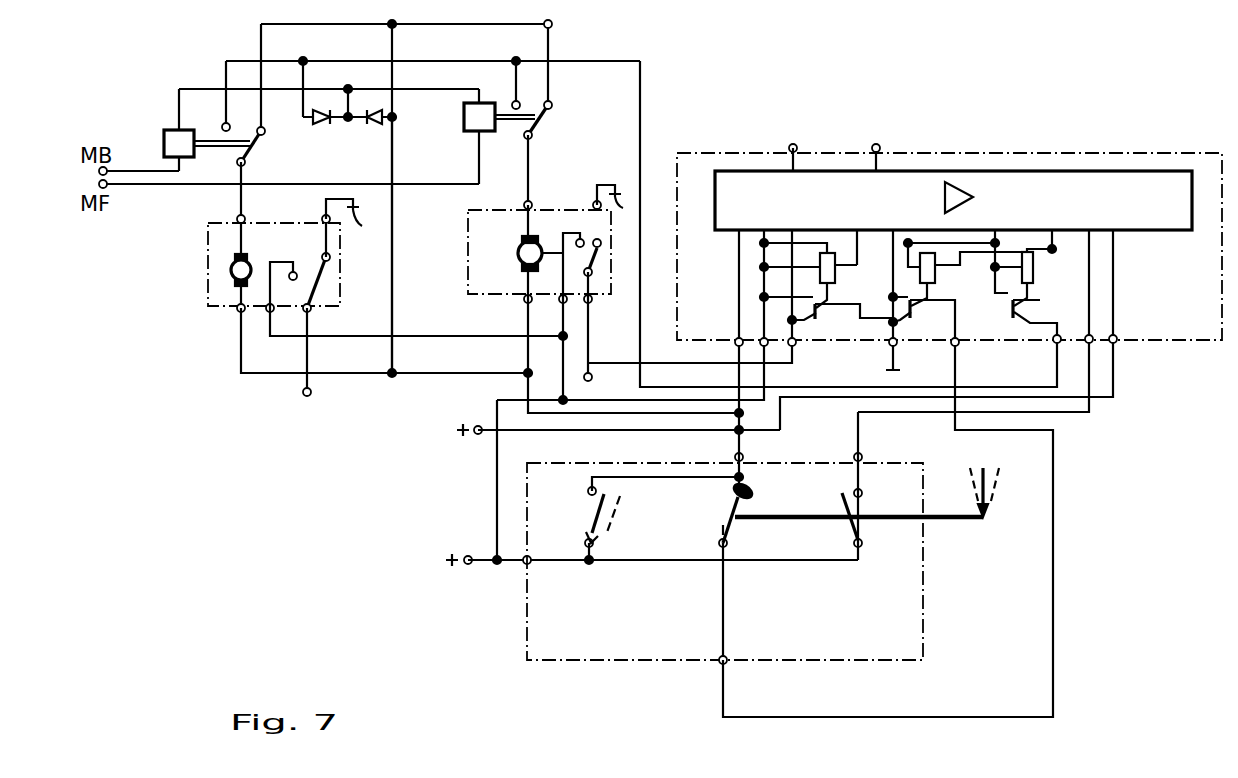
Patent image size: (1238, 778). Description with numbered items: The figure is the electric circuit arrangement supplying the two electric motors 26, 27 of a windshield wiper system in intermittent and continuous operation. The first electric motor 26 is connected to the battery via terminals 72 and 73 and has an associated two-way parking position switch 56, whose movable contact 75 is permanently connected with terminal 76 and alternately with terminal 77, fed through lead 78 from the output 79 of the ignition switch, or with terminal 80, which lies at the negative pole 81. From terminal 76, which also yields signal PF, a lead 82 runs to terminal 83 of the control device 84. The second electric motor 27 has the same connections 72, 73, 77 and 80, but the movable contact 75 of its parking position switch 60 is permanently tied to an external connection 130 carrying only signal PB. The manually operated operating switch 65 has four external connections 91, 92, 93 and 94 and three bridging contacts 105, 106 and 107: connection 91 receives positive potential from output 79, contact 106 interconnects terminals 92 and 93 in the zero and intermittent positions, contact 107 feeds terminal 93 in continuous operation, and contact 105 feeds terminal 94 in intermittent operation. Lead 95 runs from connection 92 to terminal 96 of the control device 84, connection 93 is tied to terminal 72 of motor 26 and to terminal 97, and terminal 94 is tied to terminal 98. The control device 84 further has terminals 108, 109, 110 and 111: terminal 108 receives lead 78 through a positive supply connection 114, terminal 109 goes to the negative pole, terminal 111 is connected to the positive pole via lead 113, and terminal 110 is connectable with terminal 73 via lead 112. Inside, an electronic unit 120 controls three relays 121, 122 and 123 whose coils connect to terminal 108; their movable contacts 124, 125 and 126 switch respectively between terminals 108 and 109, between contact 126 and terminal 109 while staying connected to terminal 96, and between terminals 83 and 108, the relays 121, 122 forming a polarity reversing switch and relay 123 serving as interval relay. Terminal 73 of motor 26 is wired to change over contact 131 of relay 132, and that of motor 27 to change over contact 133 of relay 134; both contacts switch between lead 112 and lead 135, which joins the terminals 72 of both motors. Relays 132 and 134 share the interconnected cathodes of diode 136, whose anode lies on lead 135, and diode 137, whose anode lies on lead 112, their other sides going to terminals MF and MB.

The relay 134 is at (172, 140).
The change over contact 133 is at (254, 150).
The diode 137 is at (318, 126).
The diode 136 is at (375, 126).
The relay 132 is at (470, 124).
The change over contact 131 is at (545, 118).
The lead 135 is at (394, 225).
The parking position switch 60 is at (305, 252).
The electric motor 27 is at (230, 270).
The external connection 130 is at (312, 310).
The movable contact 75 is at (322, 272).
The terminal 80 is at (322, 215).
The negative pole 81 is at (902, 422).
The terminal 73 is at (236, 217).
The terminal 72 is at (237, 312).
The terminal 77 is at (267, 312).
The parking position switch 56 is at (557, 220).
The electric motor 26 is at (518, 253).
The terminal 76 is at (591, 302).
The connecting line 82 is at (660, 363).
The lead 112 is at (1002, 386).
The lead 78 is at (495, 400).
The supply terminal 114 is at (470, 434).
The lead 113 is at (1102, 397).
The output of ignition switch 79 is at (466, 555).
The external connection 91 is at (522, 565).
The operating switch 65 is at (924, 632).
The bridging contact 107 is at (590, 503).
The bridging contact 106 is at (730, 520).
The bridging contact 105 is at (845, 523).
The external connection 93 is at (735, 456).
The external connection 94 is at (854, 456).
The external connection 92 is at (718, 664).
The lead 95 is at (882, 717).
The electronic unit 120 is at (1135, 190).
The control device 84 is at (1050, 153).
The relay 123 is at (826, 250).
The relay 122 is at (935, 262).
The relay 121 is at (1036, 277).
The movable contact 126 is at (822, 308).
The movable contact 125 is at (918, 308).
The movable contact 124 is at (1016, 304).
The terminal 108 is at (740, 335).
The terminal 97 is at (735, 340).
The terminal 83 is at (794, 345).
The terminal 109 is at (889, 345).
The terminal 96 is at (951, 345).
The terminal 110 is at (1053, 342).
The terminal 98 is at (1093, 342).
The terminal 111 is at (1117, 335).